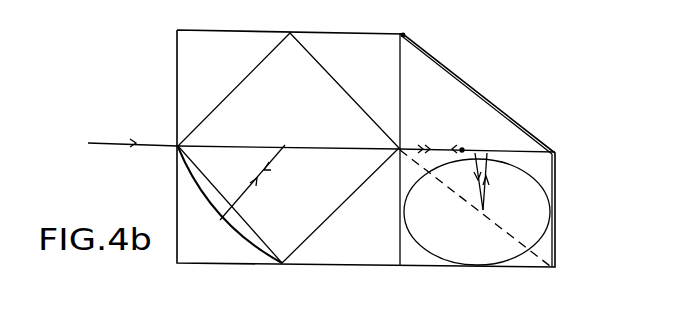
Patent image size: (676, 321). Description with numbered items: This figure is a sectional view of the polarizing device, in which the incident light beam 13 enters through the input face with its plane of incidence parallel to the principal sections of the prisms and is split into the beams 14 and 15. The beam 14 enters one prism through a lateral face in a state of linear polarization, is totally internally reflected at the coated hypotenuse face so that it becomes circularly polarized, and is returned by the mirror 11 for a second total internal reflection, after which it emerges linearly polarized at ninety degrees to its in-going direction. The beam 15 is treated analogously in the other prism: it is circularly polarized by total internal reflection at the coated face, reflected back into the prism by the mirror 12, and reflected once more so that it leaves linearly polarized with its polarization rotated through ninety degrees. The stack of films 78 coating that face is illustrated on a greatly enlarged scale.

The mirror 11 is at (260, 258).
The mirror 12 is at (523, 252).
The incident light beam 13 is at (321, 138).
The beam 14 is at (283, 150).
The beam 15 is at (412, 148).
The stack of films 78 is at (557, 225).